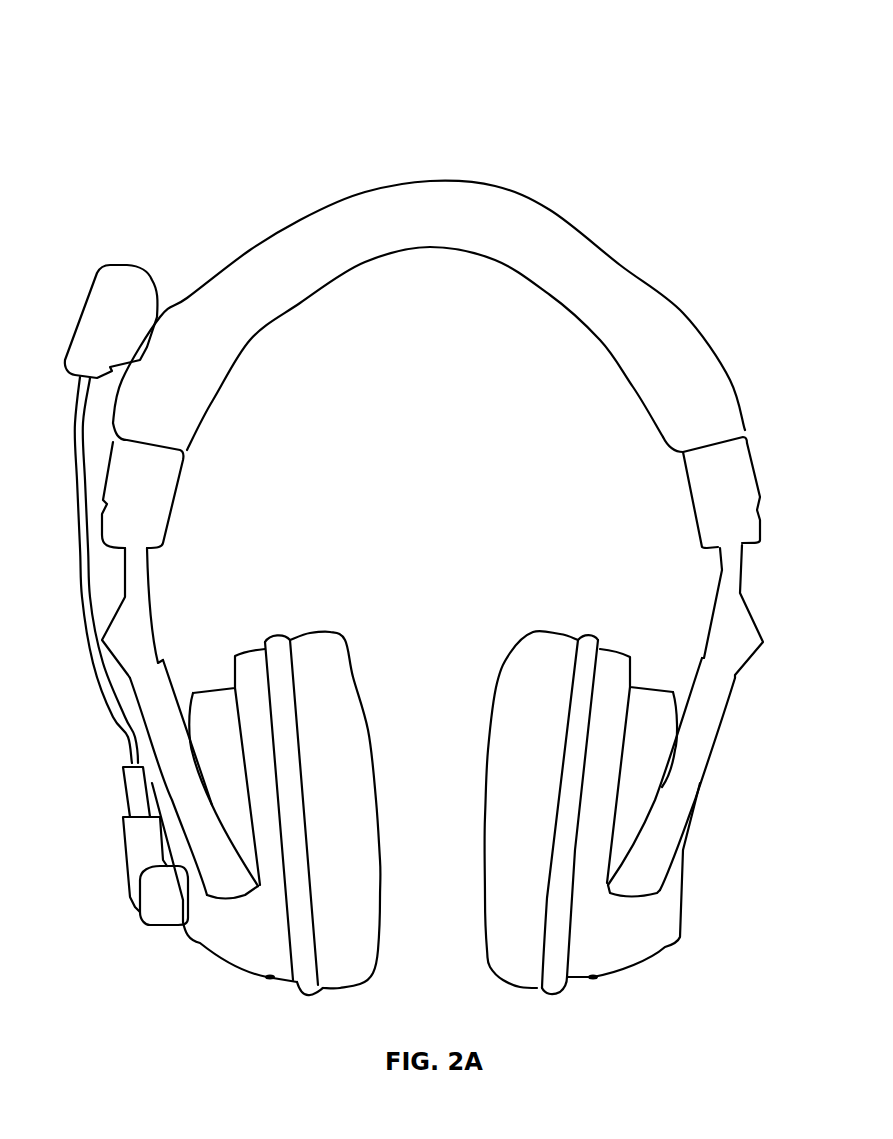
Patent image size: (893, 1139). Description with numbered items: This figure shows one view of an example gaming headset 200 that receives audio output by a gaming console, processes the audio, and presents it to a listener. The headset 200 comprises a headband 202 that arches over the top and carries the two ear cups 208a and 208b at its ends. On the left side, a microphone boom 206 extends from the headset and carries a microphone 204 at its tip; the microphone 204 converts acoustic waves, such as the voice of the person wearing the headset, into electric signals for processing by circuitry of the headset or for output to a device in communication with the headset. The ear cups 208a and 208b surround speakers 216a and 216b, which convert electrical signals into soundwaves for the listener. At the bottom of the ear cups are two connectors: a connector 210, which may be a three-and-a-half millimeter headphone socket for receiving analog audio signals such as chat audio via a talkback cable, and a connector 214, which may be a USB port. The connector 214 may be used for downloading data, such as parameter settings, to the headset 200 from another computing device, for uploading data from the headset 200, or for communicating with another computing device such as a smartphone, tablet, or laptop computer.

The headset 200 is at (122, 93).
The headband 202 is at (602, 224).
The microphone 204 is at (83, 315).
The microphone boom 206 is at (77, 547).
The ear cup 208a is at (343, 620).
The ear cup 208b is at (533, 631).
The connector 210 is at (267, 978).
The connector 214 is at (593, 978).
The speaker 216a is at (383, 770).
The speaker 216b is at (485, 733).